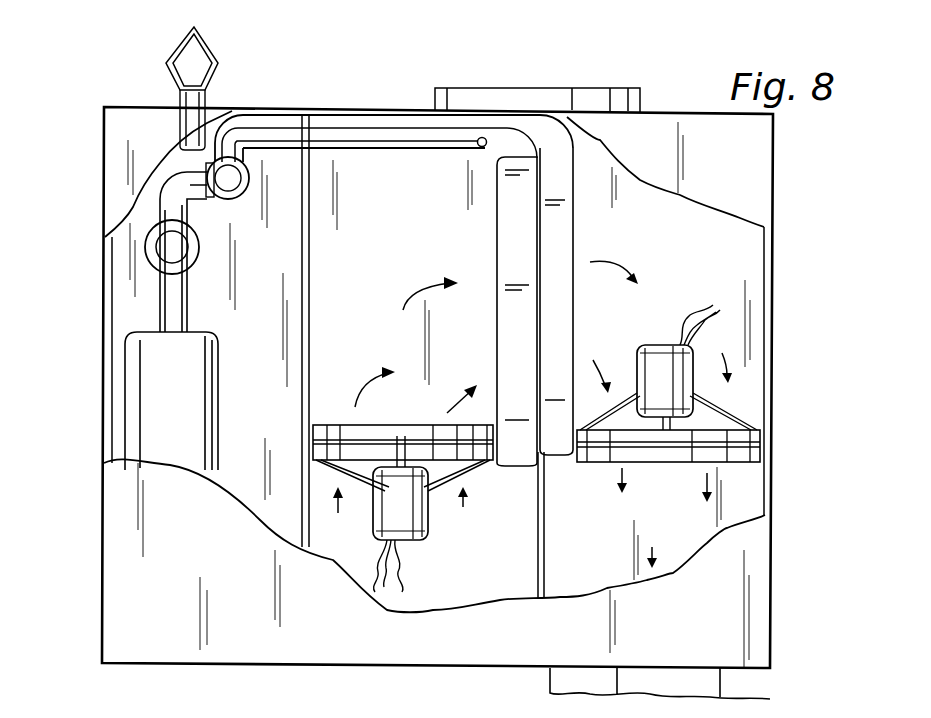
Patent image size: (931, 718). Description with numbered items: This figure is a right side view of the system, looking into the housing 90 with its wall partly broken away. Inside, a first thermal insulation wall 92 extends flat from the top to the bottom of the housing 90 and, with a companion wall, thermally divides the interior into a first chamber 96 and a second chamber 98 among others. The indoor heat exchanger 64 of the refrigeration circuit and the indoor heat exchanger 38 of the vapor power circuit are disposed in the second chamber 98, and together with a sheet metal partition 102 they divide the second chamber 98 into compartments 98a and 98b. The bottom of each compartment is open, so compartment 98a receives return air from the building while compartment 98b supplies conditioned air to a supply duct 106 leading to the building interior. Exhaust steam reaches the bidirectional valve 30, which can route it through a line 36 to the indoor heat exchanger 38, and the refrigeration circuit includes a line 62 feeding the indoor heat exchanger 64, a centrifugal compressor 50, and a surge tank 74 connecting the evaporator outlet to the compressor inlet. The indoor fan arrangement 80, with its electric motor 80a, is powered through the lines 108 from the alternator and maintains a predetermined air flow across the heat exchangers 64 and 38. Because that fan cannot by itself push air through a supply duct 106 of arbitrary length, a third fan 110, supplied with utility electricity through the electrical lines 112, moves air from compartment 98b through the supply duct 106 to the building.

The bidirectional valve 30 is at (244, 193).
The line 36 is at (275, 133).
The indoor heat exchanger 38 is at (567, 223).
The high speed centrifugal compressor 50 is at (148, 248).
The line 62 is at (496, 133).
The indoor heat exchanger 64 is at (507, 237).
The surge tank 74 is at (185, 425).
The indoor electric motor driven fan arrangement 80 is at (377, 432).
The electric motor 80a is at (420, 513).
The housing 90 is at (782, 161).
The first thermal insulation wall 92 is at (307, 390).
The first chamber 96 is at (125, 320).
The second chamber 98 is at (338, 118).
The compartment 98a is at (397, 271).
The compartment 98b is at (750, 267).
The sheet metal partition 102 is at (543, 517).
The supply duct 106 is at (753, 688).
The lines 108 is at (413, 576).
The third fan 110 is at (643, 360).
The electrical lines 112 is at (694, 312).